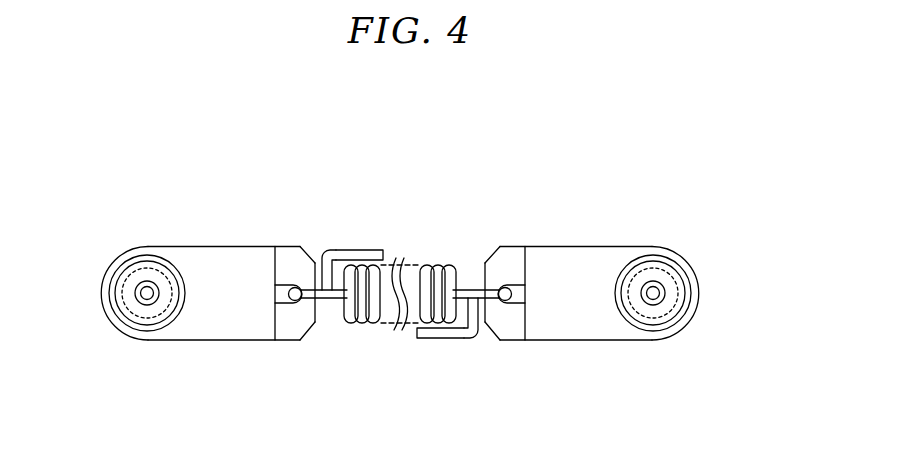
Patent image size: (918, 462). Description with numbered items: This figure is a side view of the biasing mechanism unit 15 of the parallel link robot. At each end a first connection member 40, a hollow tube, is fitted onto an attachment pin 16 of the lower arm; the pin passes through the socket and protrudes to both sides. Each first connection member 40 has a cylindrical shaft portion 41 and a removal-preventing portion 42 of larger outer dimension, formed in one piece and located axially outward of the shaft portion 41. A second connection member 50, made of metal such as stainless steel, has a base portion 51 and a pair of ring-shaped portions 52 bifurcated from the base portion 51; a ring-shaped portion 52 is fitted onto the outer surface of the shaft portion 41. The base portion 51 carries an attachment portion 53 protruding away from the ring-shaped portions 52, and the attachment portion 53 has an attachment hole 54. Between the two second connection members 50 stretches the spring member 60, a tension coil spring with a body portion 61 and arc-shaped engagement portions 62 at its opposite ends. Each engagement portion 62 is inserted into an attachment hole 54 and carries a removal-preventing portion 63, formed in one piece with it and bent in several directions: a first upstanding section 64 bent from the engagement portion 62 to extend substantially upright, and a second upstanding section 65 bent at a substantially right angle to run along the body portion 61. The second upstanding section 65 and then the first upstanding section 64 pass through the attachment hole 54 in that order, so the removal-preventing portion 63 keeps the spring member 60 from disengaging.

The biasing mechanism unit 15 is at (491, 158).
The attachment pin 16 is at (147, 297).
The first connection member 40 is at (112, 332).
The shaft portion 41 is at (145, 263).
The removal-preventing portion 42 is at (110, 292).
The second connection member 50 is at (164, 242).
The ring-shaped portion 52 is at (395, 255).
The base portion 51 is at (276, 327).
The attachment portion 53 is at (307, 256).
The attachment hole 54 is at (273, 289).
The spring member 60 is at (400, 232).
The body portion 61 is at (372, 326).
The engagement portion 62 is at (334, 312).
The removal-preventing portion 63 is at (275, 161).
The first upstanding section 64 is at (327, 251).
The second upstanding section 65 is at (374, 249).